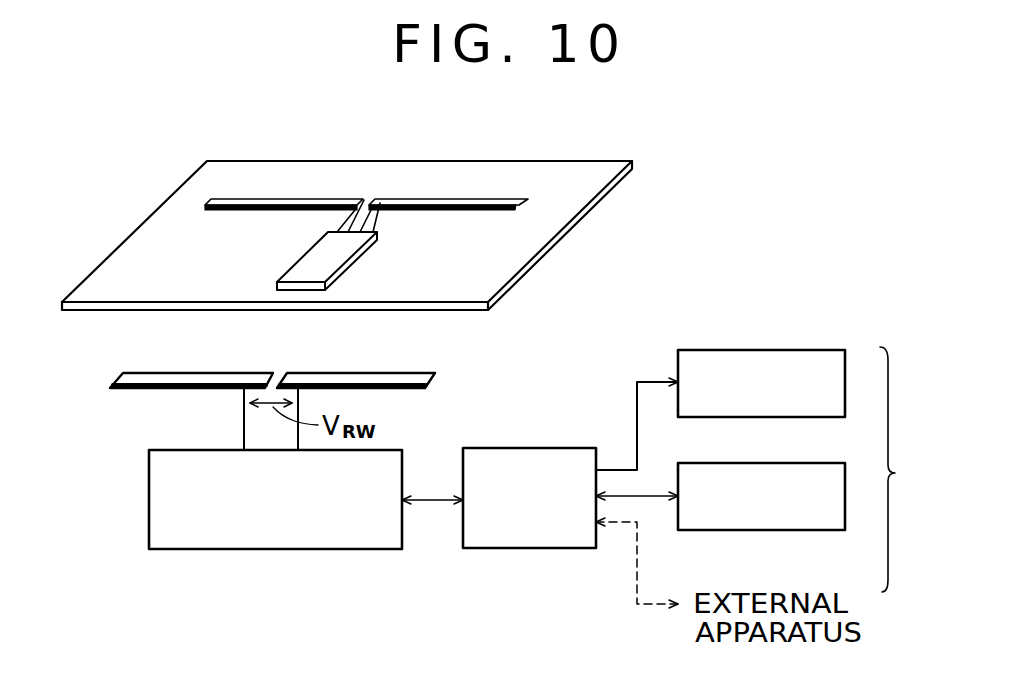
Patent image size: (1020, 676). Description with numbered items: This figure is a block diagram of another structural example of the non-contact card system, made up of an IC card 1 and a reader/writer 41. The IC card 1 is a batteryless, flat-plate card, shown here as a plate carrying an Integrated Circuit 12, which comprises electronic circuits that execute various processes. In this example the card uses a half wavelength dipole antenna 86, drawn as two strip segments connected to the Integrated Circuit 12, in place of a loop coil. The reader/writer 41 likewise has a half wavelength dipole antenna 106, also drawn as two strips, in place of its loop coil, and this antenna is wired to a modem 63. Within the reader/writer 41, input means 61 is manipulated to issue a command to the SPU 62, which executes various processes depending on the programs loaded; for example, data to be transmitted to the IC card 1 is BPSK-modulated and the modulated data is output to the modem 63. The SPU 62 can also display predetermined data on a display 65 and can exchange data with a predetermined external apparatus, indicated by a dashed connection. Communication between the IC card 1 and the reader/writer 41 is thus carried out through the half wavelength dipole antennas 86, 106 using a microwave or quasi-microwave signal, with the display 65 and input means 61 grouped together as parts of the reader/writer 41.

The IC card 1 is at (583, 209).
The half wavelength dipole antenna 86 is at (413, 198).
The Integrated Circuit 12 is at (343, 268).
The half wavelength dipole antenna 106 is at (262, 373).
The modem 63 is at (296, 549).
The SPU 62 is at (552, 548).
The display 65 is at (813, 350).
The input means 61 is at (813, 463).
The reader/writer 41 is at (806, 451).